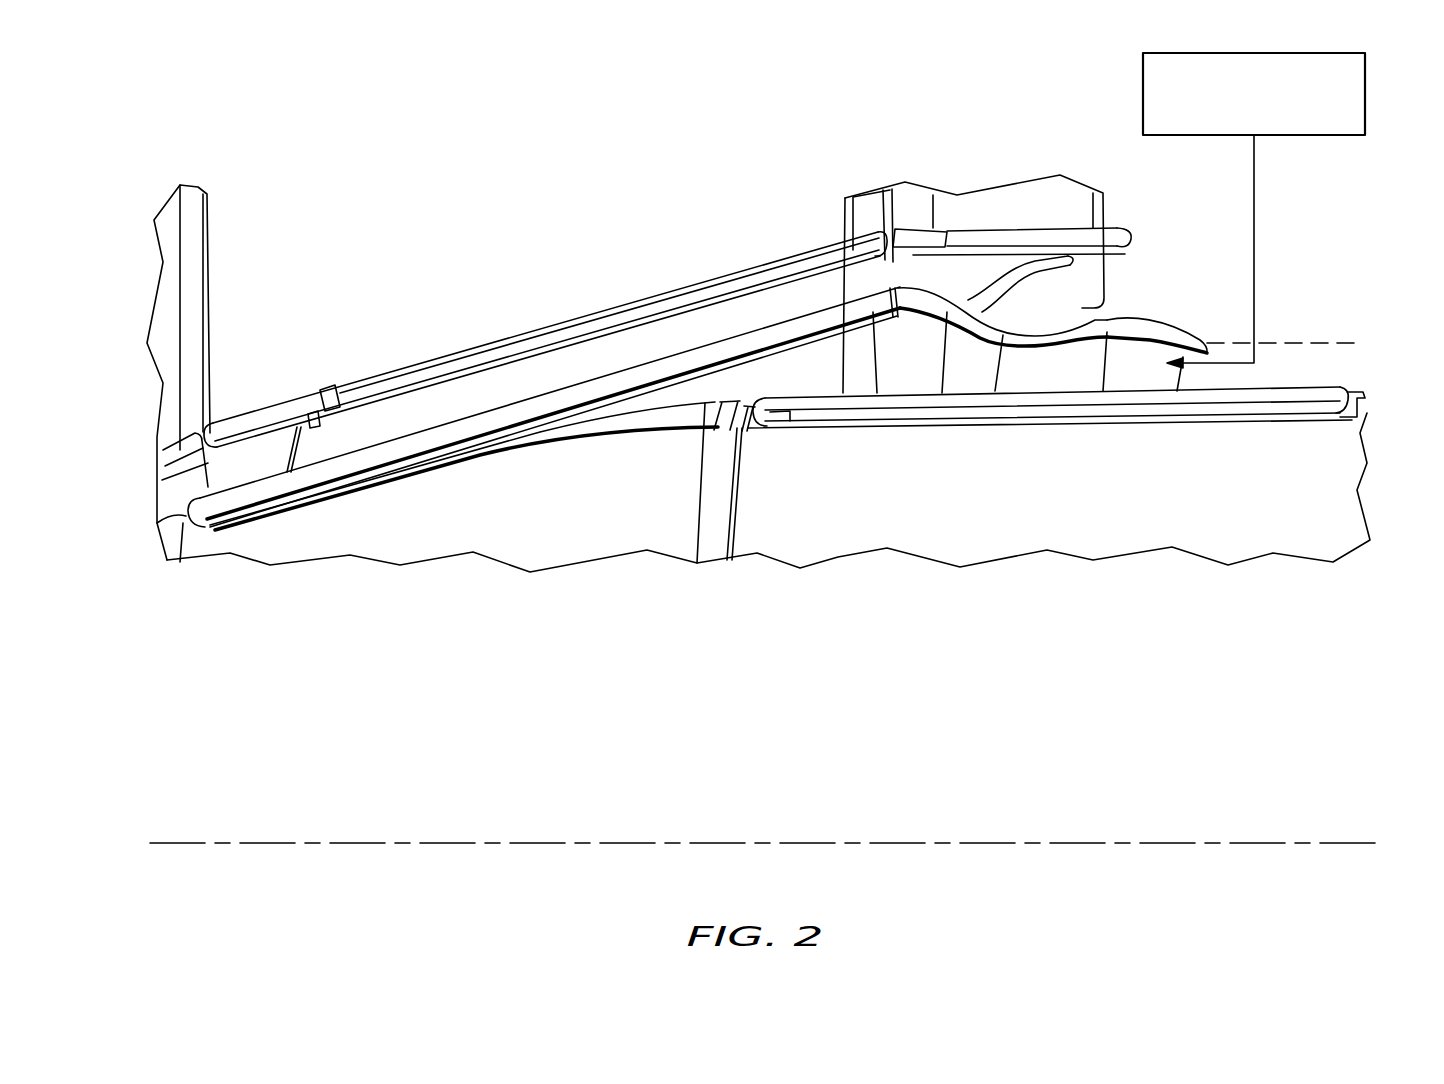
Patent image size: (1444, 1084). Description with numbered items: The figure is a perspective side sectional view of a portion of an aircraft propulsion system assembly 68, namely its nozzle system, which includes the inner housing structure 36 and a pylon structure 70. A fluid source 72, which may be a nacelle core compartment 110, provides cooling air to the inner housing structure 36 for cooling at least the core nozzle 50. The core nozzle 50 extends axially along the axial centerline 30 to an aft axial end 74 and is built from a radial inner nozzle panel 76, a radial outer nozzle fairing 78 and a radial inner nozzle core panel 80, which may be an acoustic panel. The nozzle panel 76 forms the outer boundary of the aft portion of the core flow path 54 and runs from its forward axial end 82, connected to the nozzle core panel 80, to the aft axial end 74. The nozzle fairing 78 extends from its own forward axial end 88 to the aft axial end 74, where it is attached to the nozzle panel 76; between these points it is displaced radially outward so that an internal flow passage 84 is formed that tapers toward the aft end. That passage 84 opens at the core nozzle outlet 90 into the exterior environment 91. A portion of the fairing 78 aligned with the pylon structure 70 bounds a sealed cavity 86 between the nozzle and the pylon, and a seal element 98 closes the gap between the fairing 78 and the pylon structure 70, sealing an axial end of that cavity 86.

The axial centerline 30 is at (1357, 838).
The inner housing structure 36 is at (1348, 333).
The core nozzle 50 is at (716, 330).
The core flow path 54 is at (531, 540).
The aircraft propulsion system assembly 68 is at (348, 155).
The pylon structure 70 is at (168, 279).
The fluid source 72 is at (1241, 125).
The aft axial end 74 is at (184, 525).
The radial inner nozzle panel 76 is at (557, 443).
The radial outer nozzle fairing 78 is at (833, 308).
The radial inner nozzle core panel 80 is at (965, 430).
The forward axial end 82 is at (757, 432).
The internal flow passage 84 is at (836, 383).
The cavity 86 is at (534, 388).
The forward axial end 88 is at (1208, 336).
The core nozzle outlet 90 is at (178, 548).
The exterior environment 91 is at (118, 504).
The seal element 98 is at (975, 262).
The nacelle core compartment 110 is at (1278, 376).